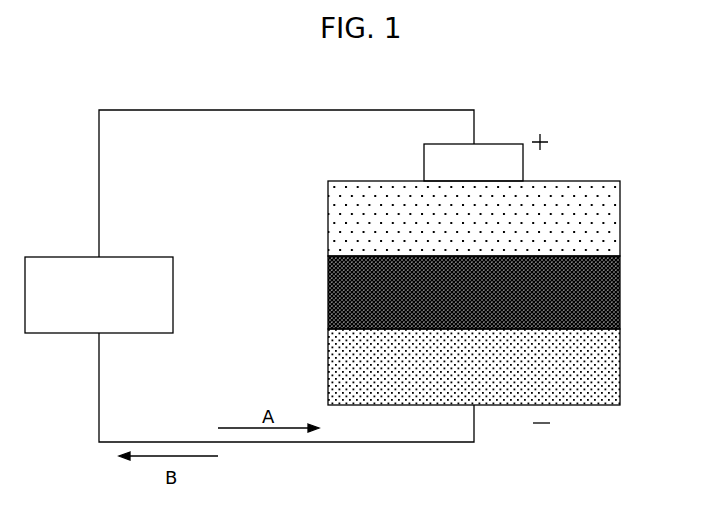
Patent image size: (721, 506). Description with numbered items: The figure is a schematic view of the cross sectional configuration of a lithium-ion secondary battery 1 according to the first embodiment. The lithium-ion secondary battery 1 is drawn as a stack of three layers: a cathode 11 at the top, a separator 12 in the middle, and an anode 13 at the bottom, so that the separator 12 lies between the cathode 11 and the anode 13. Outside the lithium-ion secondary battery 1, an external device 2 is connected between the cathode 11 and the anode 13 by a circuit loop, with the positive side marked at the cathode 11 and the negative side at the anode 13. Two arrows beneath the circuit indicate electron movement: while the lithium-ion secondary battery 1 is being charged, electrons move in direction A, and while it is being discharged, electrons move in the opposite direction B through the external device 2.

The lithium-ion secondary battery 1 is at (515, 293).
The external device 2 is at (164, 296).
The cathode 11 is at (608, 219).
The separator 12 is at (608, 293).
The anode 13 is at (495, 367).